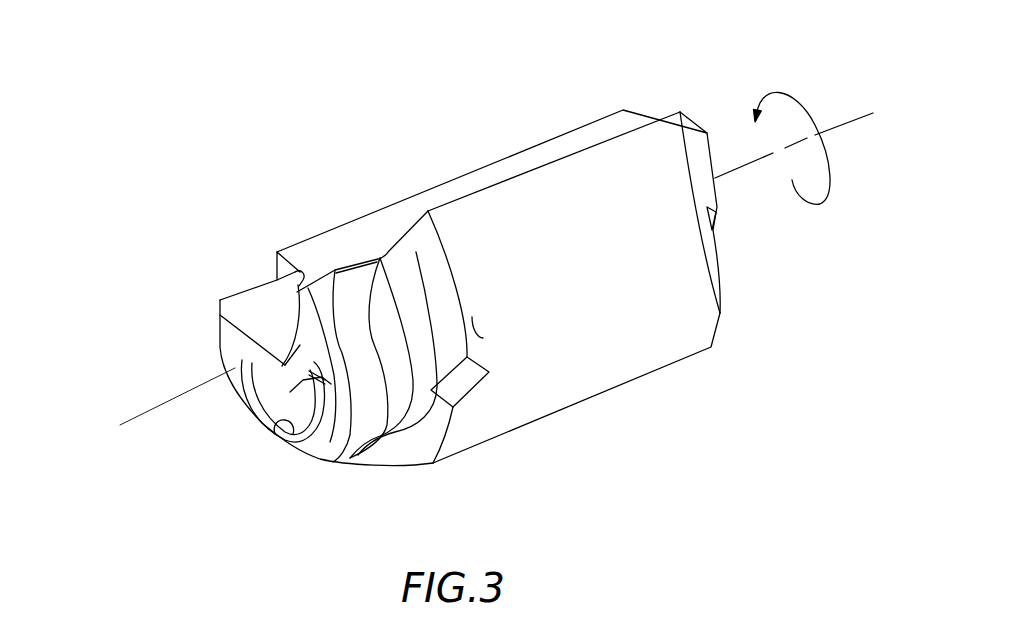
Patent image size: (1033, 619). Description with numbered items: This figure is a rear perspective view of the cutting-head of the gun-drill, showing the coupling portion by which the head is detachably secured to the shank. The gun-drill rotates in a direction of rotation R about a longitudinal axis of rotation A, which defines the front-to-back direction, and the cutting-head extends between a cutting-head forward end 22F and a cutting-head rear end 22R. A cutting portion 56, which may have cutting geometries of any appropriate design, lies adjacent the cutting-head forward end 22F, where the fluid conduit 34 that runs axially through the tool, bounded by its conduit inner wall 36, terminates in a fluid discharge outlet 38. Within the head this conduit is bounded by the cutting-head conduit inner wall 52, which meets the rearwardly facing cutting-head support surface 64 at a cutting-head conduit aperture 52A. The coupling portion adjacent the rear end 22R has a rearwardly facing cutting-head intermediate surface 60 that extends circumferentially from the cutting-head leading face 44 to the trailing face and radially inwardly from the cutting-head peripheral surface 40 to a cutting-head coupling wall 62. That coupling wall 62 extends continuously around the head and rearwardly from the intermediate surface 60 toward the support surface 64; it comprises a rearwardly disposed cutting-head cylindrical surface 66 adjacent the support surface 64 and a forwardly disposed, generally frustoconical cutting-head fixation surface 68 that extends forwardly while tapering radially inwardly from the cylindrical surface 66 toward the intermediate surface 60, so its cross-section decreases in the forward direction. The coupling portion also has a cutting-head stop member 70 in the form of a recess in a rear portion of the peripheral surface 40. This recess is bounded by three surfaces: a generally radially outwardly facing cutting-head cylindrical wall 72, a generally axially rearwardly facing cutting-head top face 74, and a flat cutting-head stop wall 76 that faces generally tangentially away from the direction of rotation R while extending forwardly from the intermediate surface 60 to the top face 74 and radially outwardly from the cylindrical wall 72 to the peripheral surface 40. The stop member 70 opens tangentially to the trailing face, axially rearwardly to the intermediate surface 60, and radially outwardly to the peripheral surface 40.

The cutting-head forward end 22F is at (716, 264).
The cutting-head rear end 22R is at (240, 348).
The fluid conduit 34 is at (252, 385).
The conduit inner wall 36 is at (280, 400).
The fluid discharge outlet 38 is at (714, 228).
The cutting-head peripheral surface 40 is at (605, 350).
The cutting-head leading face 44 is at (382, 227).
The cutting-head conduit inner wall 52 is at (310, 415).
The cutting-head conduit aperture 52A is at (276, 436).
The cutting portion 56 is at (668, 310).
The cutting-head intermediate surface 60 is at (401, 437).
The cutting-head coupling wall 62 is at (371, 412).
The cutting-head support surface 64 is at (235, 340).
The cutting-head cylindrical surface 66 is at (363, 428).
The cutting-head fixation surface 68 is at (375, 280).
The cutting-head stop member 70 is at (490, 343).
The cutting-head cylindrical wall 72 is at (413, 260).
The cutting-head top face 74 is at (436, 283).
The cutting-head stop wall 76 is at (455, 383).
The axis of rotation A is at (838, 127).
The direction of rotation R is at (792, 158).